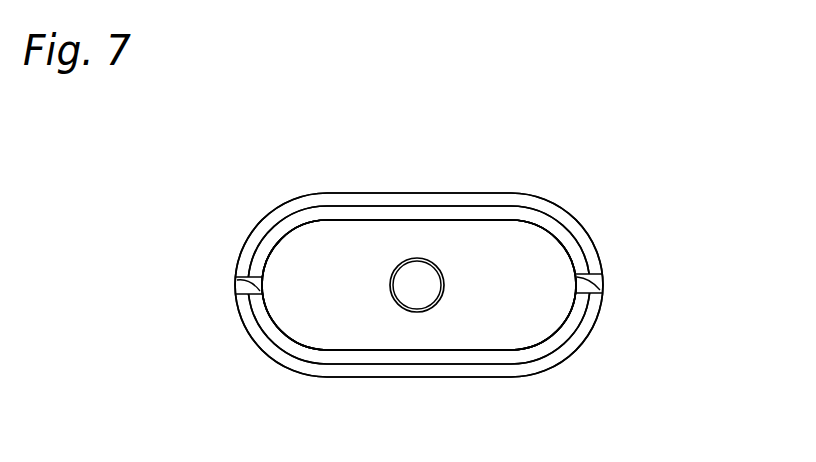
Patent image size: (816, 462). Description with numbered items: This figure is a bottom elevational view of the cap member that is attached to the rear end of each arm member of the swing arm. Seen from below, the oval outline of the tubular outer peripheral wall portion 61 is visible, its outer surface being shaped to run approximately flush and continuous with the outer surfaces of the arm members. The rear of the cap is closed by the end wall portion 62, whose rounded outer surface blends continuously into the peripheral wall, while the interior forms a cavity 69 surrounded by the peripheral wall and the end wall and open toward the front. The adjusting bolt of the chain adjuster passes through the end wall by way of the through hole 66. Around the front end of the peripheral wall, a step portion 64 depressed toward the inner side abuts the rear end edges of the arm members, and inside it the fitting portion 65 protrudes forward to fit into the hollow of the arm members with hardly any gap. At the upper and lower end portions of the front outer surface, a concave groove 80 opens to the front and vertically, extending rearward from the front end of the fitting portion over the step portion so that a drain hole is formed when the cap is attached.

The outer peripheral wall portion 61 is at (237, 311).
The end wall portion 62 is at (366, 250).
The step portion 64 is at (275, 217).
The fitting portion 65 is at (267, 243).
The through hole 66 is at (412, 262).
The cavity 69 is at (487, 267).
The concave groove 80 is at (237, 285).